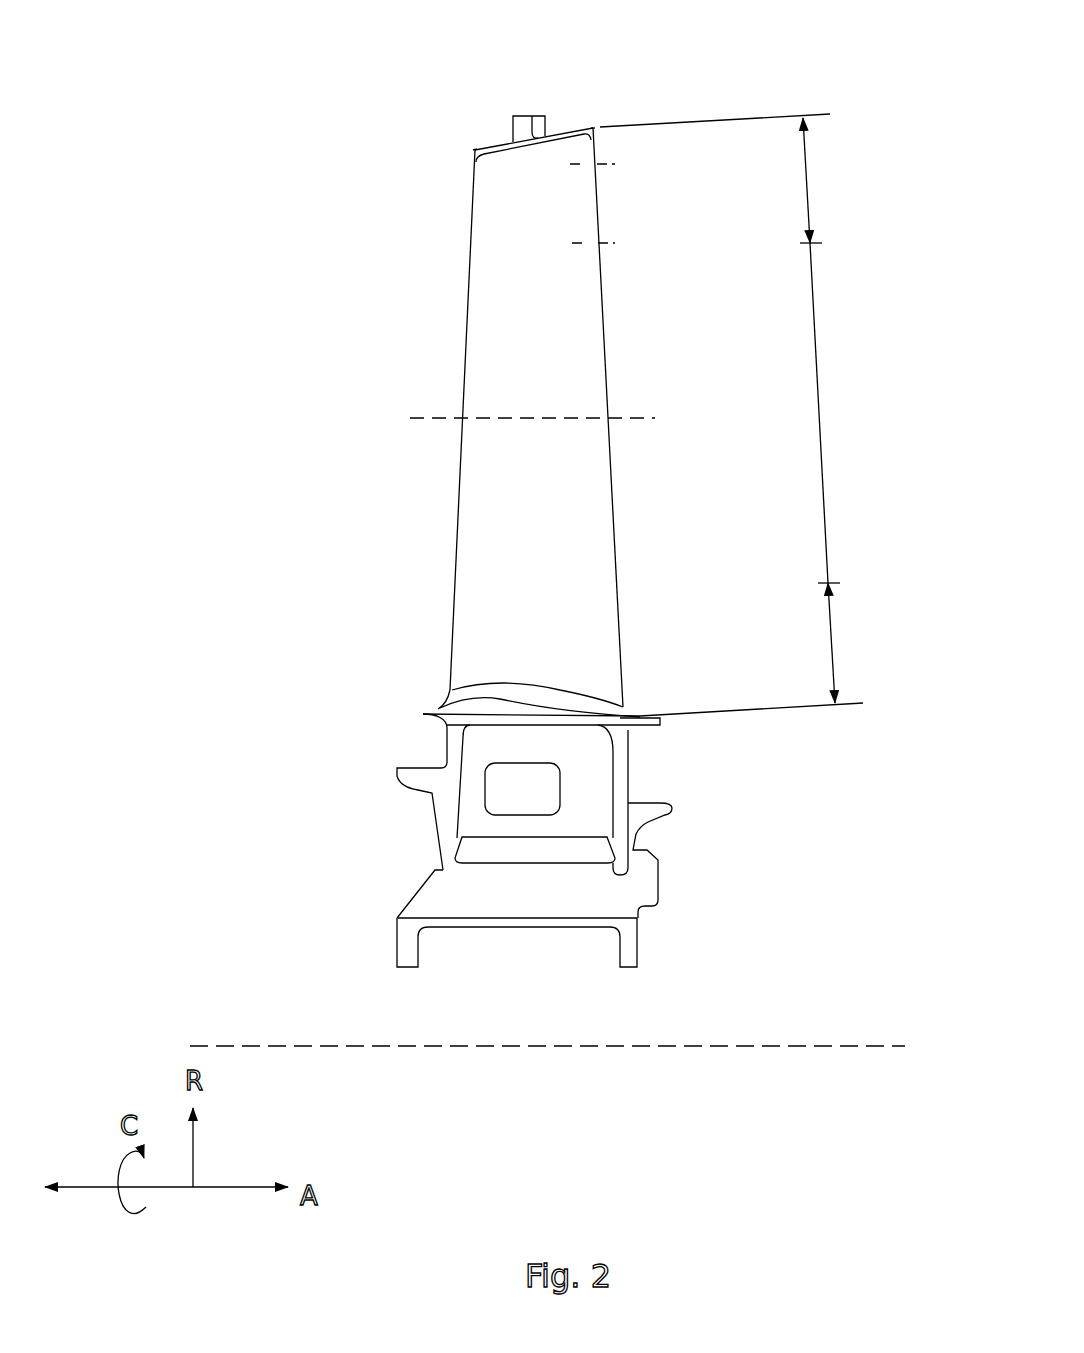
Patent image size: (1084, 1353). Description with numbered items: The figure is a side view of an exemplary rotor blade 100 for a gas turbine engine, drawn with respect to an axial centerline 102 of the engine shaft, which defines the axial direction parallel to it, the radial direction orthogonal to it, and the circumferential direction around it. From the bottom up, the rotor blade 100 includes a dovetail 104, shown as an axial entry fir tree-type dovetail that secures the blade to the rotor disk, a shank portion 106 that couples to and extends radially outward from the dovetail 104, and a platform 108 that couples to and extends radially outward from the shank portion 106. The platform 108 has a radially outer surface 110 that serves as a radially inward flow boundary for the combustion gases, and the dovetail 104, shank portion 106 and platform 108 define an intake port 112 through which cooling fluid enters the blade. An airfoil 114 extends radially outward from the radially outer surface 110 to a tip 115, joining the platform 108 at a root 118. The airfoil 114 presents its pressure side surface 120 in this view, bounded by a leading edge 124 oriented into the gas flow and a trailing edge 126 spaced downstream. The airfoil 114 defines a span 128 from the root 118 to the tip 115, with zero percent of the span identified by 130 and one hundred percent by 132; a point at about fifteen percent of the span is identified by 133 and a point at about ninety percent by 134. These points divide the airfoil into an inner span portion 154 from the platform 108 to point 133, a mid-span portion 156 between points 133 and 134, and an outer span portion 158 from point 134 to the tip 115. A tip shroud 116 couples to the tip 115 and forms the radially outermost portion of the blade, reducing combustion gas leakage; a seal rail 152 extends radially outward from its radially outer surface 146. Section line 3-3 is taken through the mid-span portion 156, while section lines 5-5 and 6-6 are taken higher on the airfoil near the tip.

The rotor blade 100 is at (315, 55).
The axial centerline 102 is at (750, 1046).
The dovetail 104 is at (397, 940).
The shank portion 106 is at (612, 782).
The platform 108 is at (415, 715).
The radially outer surface 110 is at (437, 708).
The intake port 112 is at (505, 955).
The airfoil 114 is at (498, 417).
The tip 115 is at (470, 150).
The tip shroud 116 is at (582, 128).
The root 118 is at (570, 700).
The pressure side surface 120 is at (567, 396).
The leading edge 124 is at (463, 387).
The trailing edge 126 is at (612, 505).
The span 128 is at (820, 315).
The zero percent span position 130 is at (782, 711).
The one hundred percent span position 132 is at (652, 124).
The fifteen percent span point 133 is at (832, 581).
The ninety percent span point 134 is at (812, 243).
The radially outer surface 146 is at (488, 145).
The seal rail 152 is at (525, 115).
The inner span portion 154 is at (385, 612).
The mid-span portion 156 is at (365, 468).
The outer span portion 158 is at (420, 255).
The section line 3- 3 is at (532, 435).
The section line 5- 5 is at (593, 244).
The section line 6- 6 is at (589, 165).